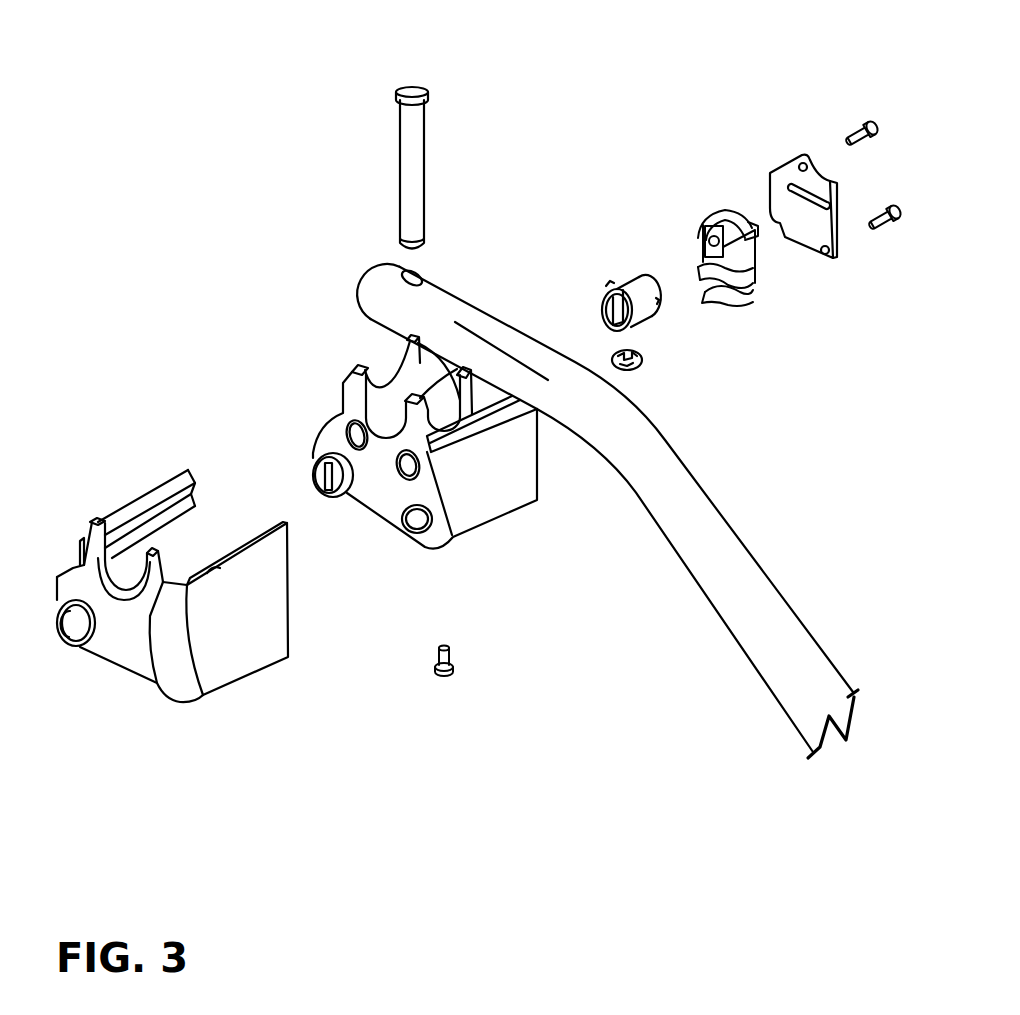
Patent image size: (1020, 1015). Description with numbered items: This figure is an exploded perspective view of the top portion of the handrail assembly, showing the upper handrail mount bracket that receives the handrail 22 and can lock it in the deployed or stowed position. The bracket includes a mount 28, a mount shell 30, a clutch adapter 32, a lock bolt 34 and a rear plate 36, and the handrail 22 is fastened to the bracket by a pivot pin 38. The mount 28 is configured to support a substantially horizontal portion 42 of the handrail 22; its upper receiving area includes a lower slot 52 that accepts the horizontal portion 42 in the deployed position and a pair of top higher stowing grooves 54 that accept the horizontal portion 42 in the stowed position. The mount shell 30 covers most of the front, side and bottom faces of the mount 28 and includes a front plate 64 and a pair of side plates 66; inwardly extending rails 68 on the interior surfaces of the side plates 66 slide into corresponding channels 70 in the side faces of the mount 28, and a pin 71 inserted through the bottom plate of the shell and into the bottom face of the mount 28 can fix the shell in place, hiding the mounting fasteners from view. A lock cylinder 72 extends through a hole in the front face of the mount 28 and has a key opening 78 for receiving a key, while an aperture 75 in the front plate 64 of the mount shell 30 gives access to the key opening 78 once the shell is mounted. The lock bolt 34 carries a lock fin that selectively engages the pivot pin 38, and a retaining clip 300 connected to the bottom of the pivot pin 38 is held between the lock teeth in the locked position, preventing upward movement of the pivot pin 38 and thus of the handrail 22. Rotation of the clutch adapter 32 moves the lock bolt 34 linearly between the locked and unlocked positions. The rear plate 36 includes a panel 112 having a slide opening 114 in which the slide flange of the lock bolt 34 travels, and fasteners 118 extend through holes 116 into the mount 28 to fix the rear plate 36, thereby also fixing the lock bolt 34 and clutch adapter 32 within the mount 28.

The handrail 22 is at (715, 621).
The mount 28 is at (479, 541).
The mount shell 30 is at (187, 598).
The clutch adapter 32 is at (622, 283).
The lock bolt 34 is at (763, 294).
The rear plate 36 is at (803, 223).
The pivot pin 38 is at (427, 160).
The horizontal portion 42 is at (470, 328).
The lower slot 52 is at (378, 407).
The top higher stowing grooves 54 is at (377, 361).
The front plate 64 is at (128, 650).
The side plates 66 is at (148, 493).
The rails 68 is at (202, 482).
The channels 70 is at (478, 445).
The pin 71 is at (457, 657).
The lock cylinder 72 is at (311, 467).
The aperture 75 is at (60, 637).
The key opening 78 is at (340, 495).
The panel 112 is at (818, 226).
The slide opening 114 is at (791, 188).
The holes 116 is at (799, 164).
The fasteners 118 is at (860, 120).
The retaining clip 300 is at (645, 358).